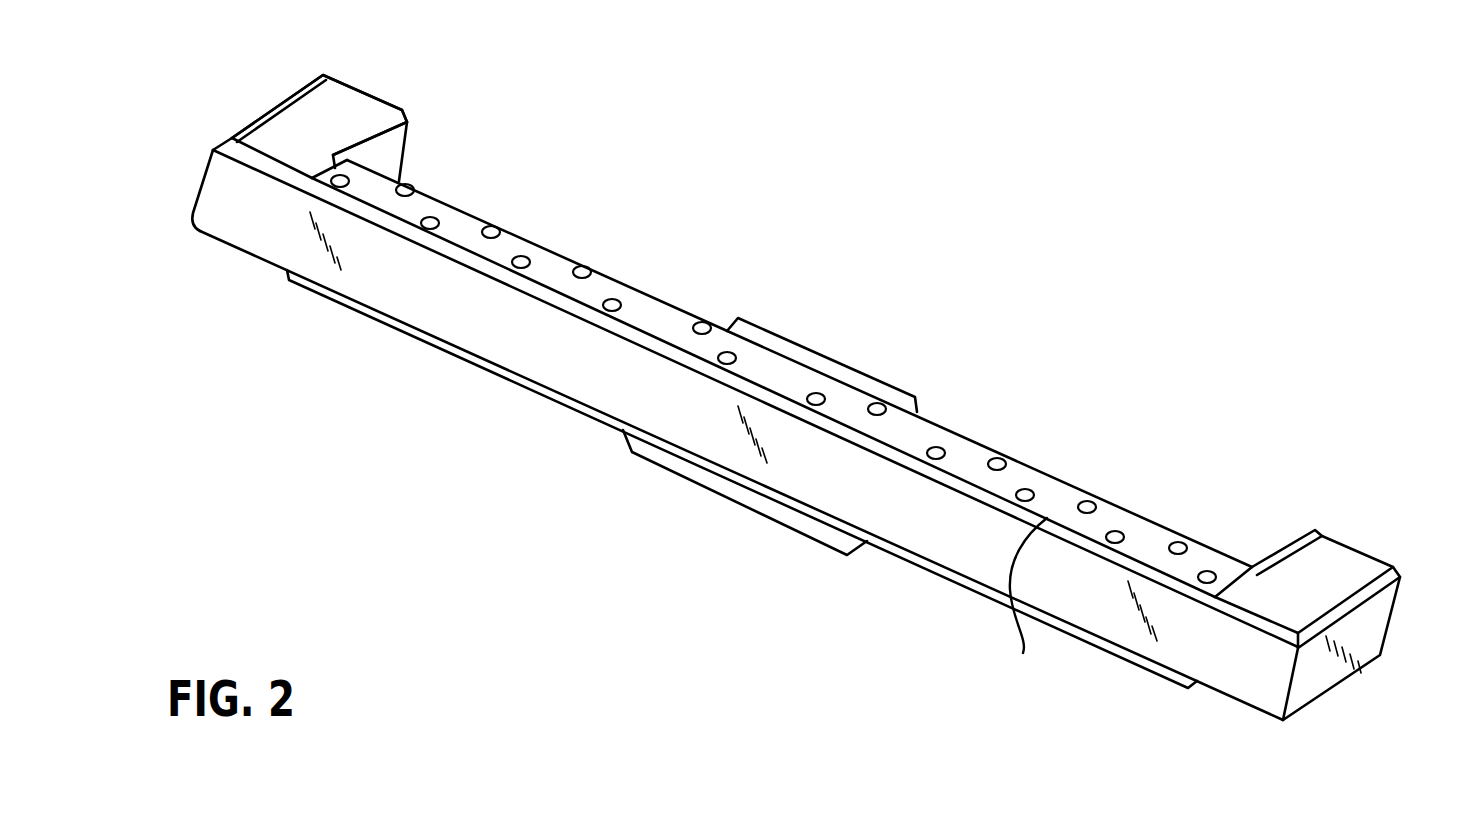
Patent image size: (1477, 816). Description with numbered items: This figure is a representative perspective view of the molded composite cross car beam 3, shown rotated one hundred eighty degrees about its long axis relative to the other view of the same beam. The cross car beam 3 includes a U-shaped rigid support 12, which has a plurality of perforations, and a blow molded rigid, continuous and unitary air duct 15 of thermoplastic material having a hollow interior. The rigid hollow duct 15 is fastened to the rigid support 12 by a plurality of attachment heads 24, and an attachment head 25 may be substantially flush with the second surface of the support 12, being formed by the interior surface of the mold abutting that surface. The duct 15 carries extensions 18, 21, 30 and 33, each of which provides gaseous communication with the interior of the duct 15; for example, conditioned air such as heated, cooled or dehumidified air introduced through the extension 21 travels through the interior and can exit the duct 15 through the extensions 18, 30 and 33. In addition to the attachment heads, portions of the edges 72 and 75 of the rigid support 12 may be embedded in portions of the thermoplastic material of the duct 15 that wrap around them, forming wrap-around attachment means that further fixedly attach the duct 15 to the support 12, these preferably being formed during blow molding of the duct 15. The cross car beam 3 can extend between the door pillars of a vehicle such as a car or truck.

The molded composite cross car beam 3 is at (432, 497).
The U-shaped rigid support 12 is at (749, 435).
The air duct 15 is at (258, 222).
The extension 18 is at (708, 478).
The extension 21 is at (833, 358).
The attachment head 24 is at (1185, 537).
The attachment head 25 is at (495, 223).
The extension 30 is at (1365, 548).
The extension 33 is at (372, 93).
The edge 72 is at (1023, 653).
The edge 75 is at (515, 375).